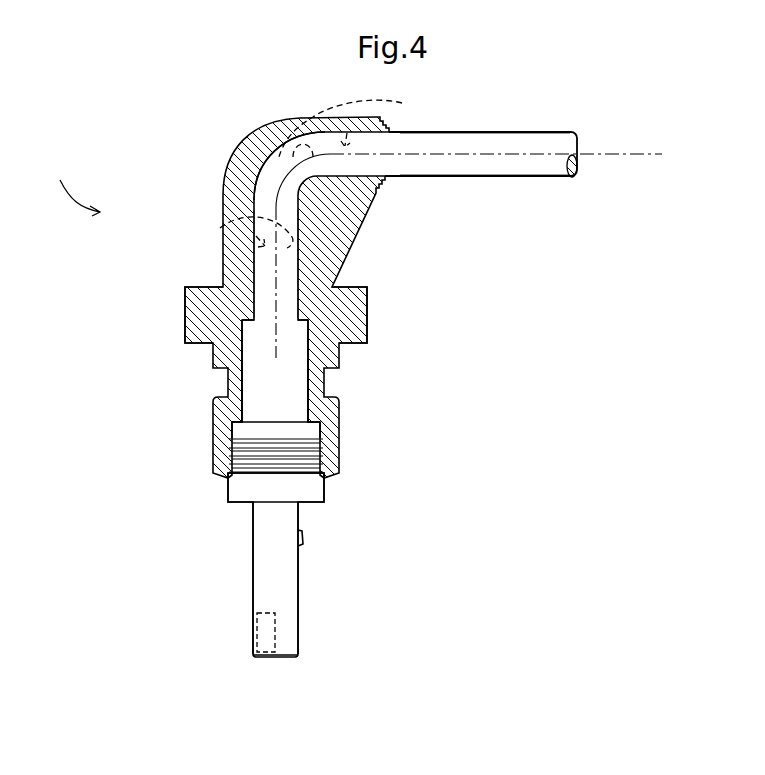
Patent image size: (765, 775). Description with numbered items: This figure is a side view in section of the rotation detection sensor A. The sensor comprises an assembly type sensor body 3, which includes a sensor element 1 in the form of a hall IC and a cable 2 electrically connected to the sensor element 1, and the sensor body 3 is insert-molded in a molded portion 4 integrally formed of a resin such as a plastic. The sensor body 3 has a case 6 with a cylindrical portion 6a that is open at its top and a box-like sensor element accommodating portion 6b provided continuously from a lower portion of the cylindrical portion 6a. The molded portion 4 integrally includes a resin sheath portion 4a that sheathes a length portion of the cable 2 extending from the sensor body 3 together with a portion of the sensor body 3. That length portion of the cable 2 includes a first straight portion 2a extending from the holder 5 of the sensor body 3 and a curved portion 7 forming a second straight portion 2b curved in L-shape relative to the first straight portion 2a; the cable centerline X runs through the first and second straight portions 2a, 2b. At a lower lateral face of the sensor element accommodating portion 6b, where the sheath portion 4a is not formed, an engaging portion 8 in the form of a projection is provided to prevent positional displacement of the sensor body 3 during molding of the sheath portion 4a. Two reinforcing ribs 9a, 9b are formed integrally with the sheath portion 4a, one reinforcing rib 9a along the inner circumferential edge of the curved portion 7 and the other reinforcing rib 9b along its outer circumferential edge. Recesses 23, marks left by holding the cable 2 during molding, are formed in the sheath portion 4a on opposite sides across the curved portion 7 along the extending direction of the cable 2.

The sensor element 1 is at (265, 612).
The cable 2 is at (500, 177).
The first straight portion 2a is at (287, 268).
The second straight portion 2b is at (487, 132).
The sensor body 3 is at (320, 388).
The molded portion 4 is at (176, 316).
The resin sheath portion 4a is at (356, 319).
The holder 5 is at (249, 397).
The case 6 is at (244, 544).
The cylindrical portion 6a is at (312, 493).
The sensor element accommodating portion 6b is at (288, 587).
The curved portion 7 is at (293, 152).
The engaging portion 8 is at (305, 539).
The reinforcing rib 9a is at (356, 230).
The reinforcing rib 9b is at (233, 173).
The recesses 23 is at (177, 231).
The cable centerline X is at (504, 157).
The rotation detection sensor A is at (73, 187).